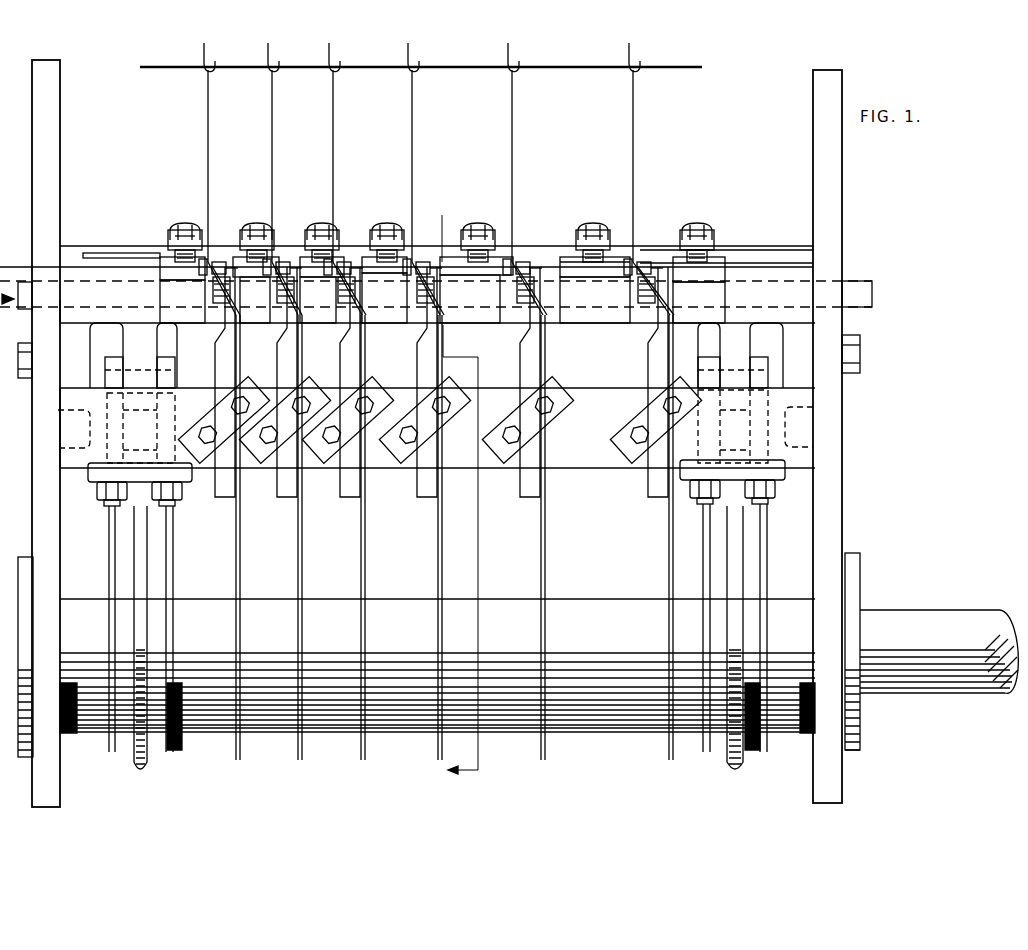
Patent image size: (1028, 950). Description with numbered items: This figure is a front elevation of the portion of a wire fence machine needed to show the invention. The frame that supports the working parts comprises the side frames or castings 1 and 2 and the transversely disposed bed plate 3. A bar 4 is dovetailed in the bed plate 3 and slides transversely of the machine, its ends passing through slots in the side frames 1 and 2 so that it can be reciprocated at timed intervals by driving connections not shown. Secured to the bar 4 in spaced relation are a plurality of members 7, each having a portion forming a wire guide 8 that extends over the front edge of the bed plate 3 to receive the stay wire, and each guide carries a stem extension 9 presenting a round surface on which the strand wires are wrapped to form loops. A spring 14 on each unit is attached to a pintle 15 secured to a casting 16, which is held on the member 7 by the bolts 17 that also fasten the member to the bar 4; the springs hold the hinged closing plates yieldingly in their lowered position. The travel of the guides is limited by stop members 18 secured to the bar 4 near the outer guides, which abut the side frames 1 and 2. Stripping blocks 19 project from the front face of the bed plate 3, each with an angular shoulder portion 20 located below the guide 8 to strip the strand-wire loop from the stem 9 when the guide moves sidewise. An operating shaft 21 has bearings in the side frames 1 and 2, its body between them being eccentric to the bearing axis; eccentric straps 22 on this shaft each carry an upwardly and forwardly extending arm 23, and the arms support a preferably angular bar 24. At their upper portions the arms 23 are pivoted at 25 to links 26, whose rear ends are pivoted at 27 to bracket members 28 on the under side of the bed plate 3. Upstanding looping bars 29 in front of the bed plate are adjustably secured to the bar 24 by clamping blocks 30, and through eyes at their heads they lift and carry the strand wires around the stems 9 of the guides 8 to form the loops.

The side frame or casting 1 is at (45, 485).
The side frame or casting 2 is at (835, 476).
The bed plate 3 is at (585, 316).
The bar 4 is at (862, 266).
The member 7 is at (387, 278).
The wire guide 8 is at (474, 280).
The stem extension 9 is at (232, 264).
The spring 14 is at (333, 246).
The pintle 15 is at (200, 236).
The casting 16 is at (495, 233).
The bolt 17 is at (268, 233).
The stop member 18 is at (105, 250).
The stripping block 19 is at (206, 316).
The angular shoulder portion 20 is at (620, 280).
The operating shaft 21 is at (518, 655).
The eccentric strap 22 is at (158, 618).
The arm 23 is at (165, 514).
The angular bar 24 is at (437, 428).
The pivot 25 is at (112, 492).
The link 26 is at (177, 402).
The pivot 27 is at (165, 371).
The bracket member 28 is at (148, 349).
The looping bar 29 is at (290, 362).
The clamping block 30 is at (439, 420).